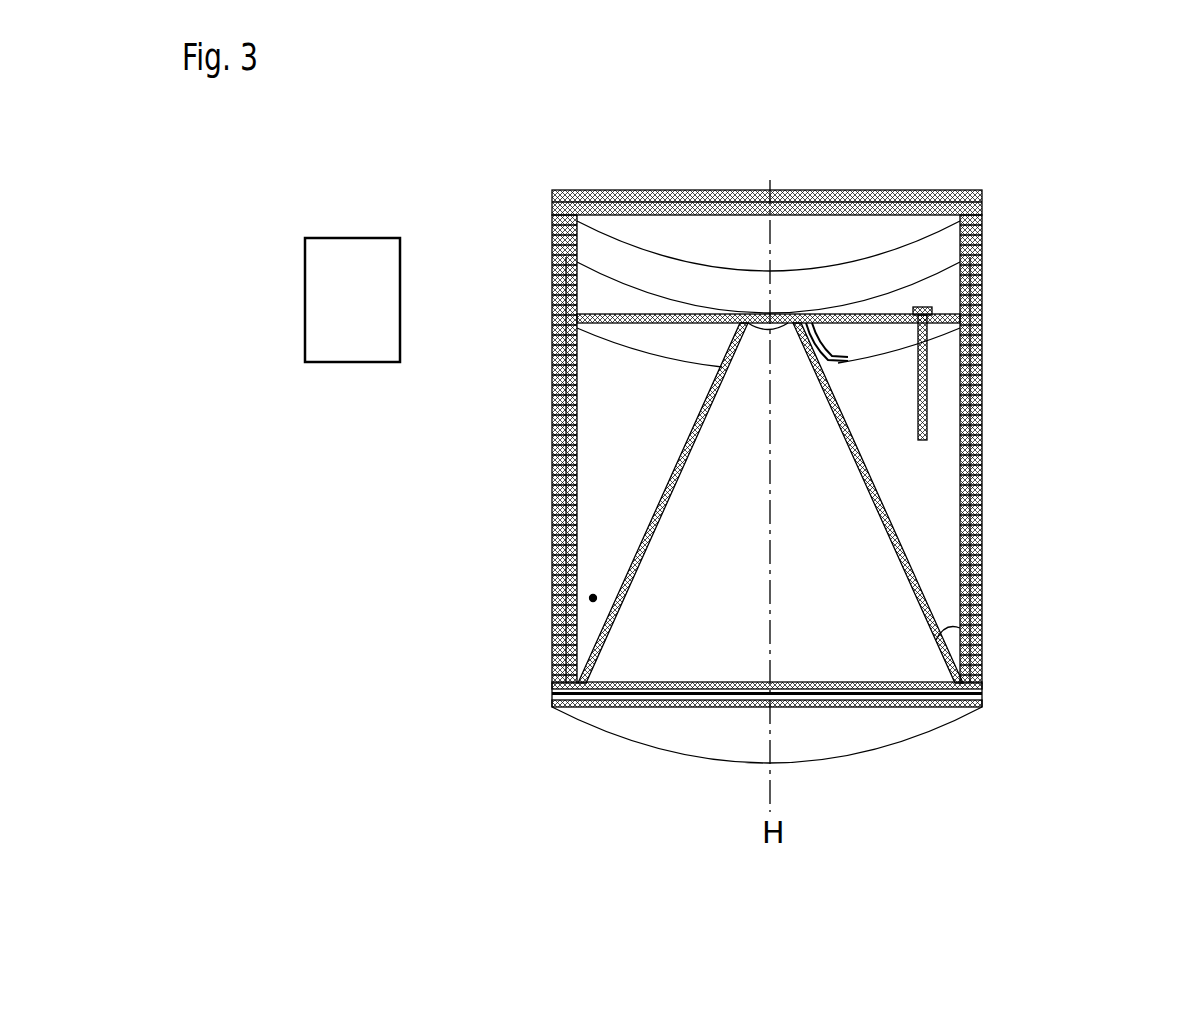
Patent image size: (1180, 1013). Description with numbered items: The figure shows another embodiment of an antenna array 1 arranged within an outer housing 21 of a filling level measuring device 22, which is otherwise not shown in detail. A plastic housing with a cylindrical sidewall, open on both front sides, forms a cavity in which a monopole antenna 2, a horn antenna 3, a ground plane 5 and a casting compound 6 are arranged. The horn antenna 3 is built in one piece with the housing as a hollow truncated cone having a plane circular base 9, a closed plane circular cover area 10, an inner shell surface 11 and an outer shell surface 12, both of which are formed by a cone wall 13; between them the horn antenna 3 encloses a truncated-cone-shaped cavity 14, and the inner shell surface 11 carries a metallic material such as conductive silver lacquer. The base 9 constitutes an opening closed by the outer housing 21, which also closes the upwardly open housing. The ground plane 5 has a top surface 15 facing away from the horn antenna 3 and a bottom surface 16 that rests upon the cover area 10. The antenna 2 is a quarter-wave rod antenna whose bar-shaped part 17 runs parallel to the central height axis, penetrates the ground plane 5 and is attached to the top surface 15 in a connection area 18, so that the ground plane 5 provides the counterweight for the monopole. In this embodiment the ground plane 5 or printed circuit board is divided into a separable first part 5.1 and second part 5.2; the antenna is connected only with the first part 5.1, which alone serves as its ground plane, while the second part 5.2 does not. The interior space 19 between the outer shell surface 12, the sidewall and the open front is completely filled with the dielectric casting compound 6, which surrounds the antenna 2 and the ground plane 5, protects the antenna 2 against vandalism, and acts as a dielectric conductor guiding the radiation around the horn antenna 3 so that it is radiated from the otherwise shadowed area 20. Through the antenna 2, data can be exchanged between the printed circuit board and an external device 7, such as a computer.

The antenna array 1 is at (892, 272).
The antenna 2 is at (985, 470).
The horn antenna 3 is at (922, 565).
The ground plane 5 is at (607, 310).
The first part 5.1 is at (861, 340).
The second part 5.2 is at (688, 342).
The casting compound 6 is at (606, 557).
The external device 7 is at (383, 297).
The base 9 is at (670, 698).
The cover area 10 is at (779, 310).
The inner shell surface 11 is at (603, 690).
The outer shell surface 12 is at (633, 519).
The cone wall 13 is at (980, 662).
The cavity 14 is at (690, 477).
The top surface 15 is at (667, 311).
The bottom surface 16 is at (636, 332).
The bar-shaped part 17 is at (936, 415).
The connection area 18 is at (985, 297).
The interior space 19 is at (592, 598).
The shadowed area 20 is at (604, 403).
The outer housing 21 is at (560, 630).
The filling level measuring device 22 is at (1063, 495).